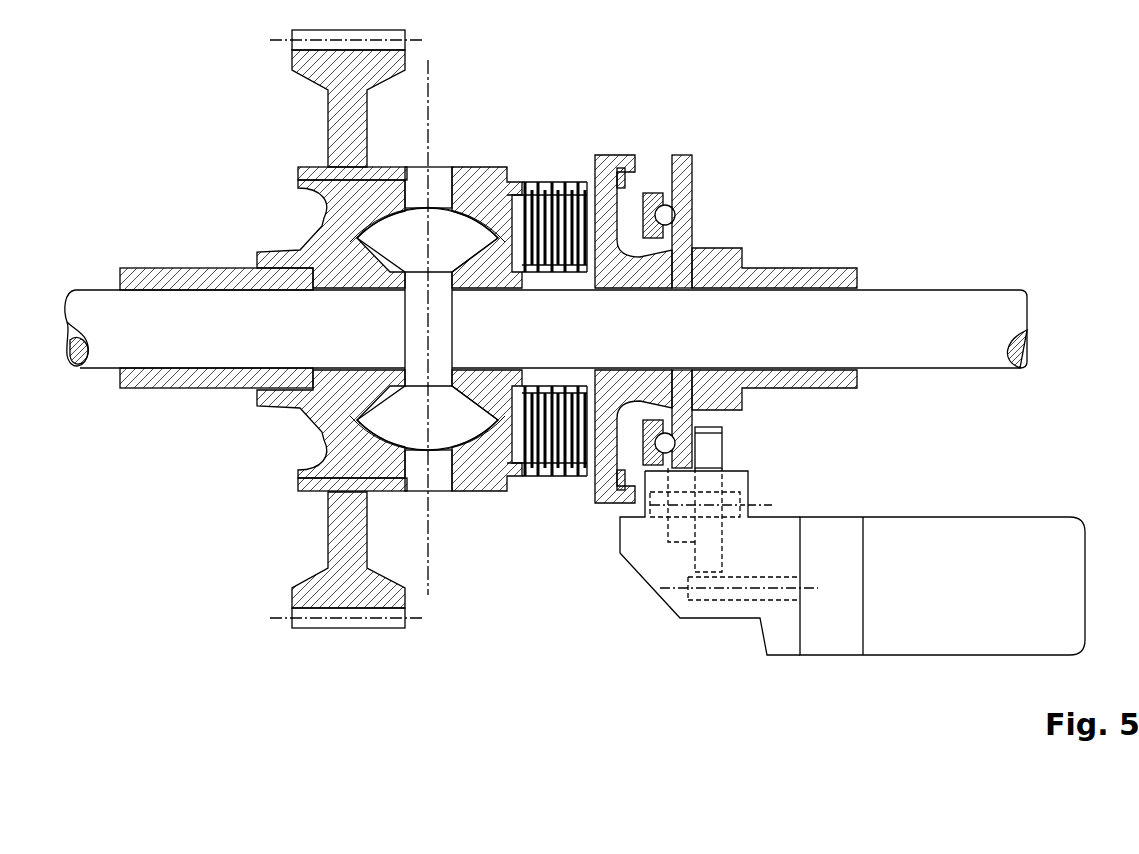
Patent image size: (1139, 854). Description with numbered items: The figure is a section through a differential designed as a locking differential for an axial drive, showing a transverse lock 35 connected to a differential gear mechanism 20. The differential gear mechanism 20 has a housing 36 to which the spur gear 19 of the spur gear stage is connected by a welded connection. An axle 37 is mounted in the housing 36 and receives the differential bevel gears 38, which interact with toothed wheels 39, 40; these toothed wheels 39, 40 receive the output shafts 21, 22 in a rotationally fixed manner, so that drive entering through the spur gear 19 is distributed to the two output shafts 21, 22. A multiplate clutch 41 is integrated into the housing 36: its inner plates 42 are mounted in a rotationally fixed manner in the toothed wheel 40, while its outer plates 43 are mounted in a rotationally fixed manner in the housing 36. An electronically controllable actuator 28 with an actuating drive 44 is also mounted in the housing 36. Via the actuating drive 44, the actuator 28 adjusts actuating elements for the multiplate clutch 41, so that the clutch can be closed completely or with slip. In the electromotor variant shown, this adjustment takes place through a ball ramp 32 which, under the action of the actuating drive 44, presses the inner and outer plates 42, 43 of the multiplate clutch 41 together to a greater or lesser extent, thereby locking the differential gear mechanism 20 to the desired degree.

The spur gear 19 is at (318, 68).
The differential gear mechanism 20 is at (268, 461).
The output shaft 21 is at (103, 290).
The output shaft 22 is at (938, 292).
The actuator 28 is at (940, 517).
The ball ramp 32 is at (668, 182).
The transverse lock 35 is at (609, 518).
The housing 36 is at (478, 188).
The axle 37 is at (438, 182).
The differential bevel gears 38 is at (398, 220).
The toothed wheel 39 is at (312, 418).
The toothed wheel 40 is at (488, 492).
The multiplate clutch 41 is at (553, 486).
The inner plates 42 is at (540, 275).
The outer plates 43 is at (528, 182).
The actuating drive 44 is at (744, 455).